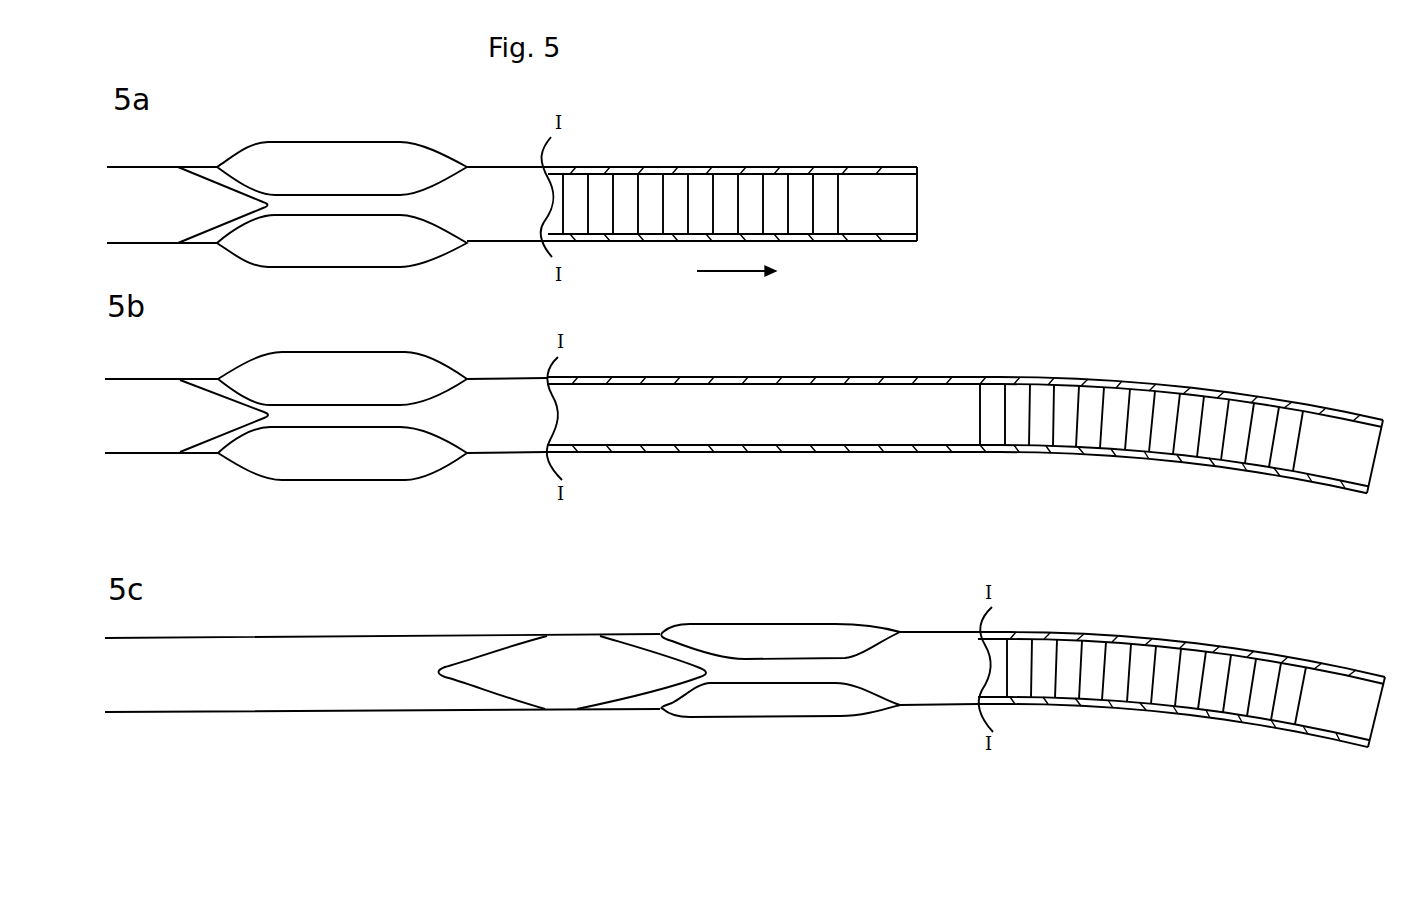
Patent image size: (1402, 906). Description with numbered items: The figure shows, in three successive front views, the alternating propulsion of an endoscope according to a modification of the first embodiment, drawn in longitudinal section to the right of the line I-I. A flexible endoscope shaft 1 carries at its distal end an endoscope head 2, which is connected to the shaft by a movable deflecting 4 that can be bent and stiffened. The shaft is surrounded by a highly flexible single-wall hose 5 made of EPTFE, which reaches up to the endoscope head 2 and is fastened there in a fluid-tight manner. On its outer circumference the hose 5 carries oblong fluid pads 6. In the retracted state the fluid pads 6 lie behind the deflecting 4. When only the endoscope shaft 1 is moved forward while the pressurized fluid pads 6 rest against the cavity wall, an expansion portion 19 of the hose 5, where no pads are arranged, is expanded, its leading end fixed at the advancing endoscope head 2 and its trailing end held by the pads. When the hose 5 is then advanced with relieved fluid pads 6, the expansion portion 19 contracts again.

In FIG. 5b, the flexible endoscope shaft 1 is at (685, 407).
In FIG. 5a, the endoscope head 2 is at (880, 202).
In FIG. 5b, the endoscope head 2 is at (1343, 447).
In FIG. 5c, the endoscope head 2 is at (1335, 692).
In FIG. 5a, the deflecting 4 is at (655, 208).
In FIG. 5b, the deflecting 4 is at (1068, 423).
In FIG. 5c, the deflecting 4 is at (1103, 685).
In FIG. 5a, the hose 5 is at (472, 187).
In FIG. 5b, the hose 5 is at (487, 400).
In FIG. 5c, the hose 5 is at (888, 662).
In FIG. 5a, the fluid pads 6 is at (323, 233).
In FIG. 5b, the fluid pads 6 is at (287, 442).
In FIG. 5c, the fluid pads 6 is at (748, 708).
In FIG. 5a, the expansion portion 19 is at (767, 167).
In FIG. 5b, the expansion portion 19 is at (848, 377).
In FIG. 5c, the expansion portion 19 is at (1095, 632).